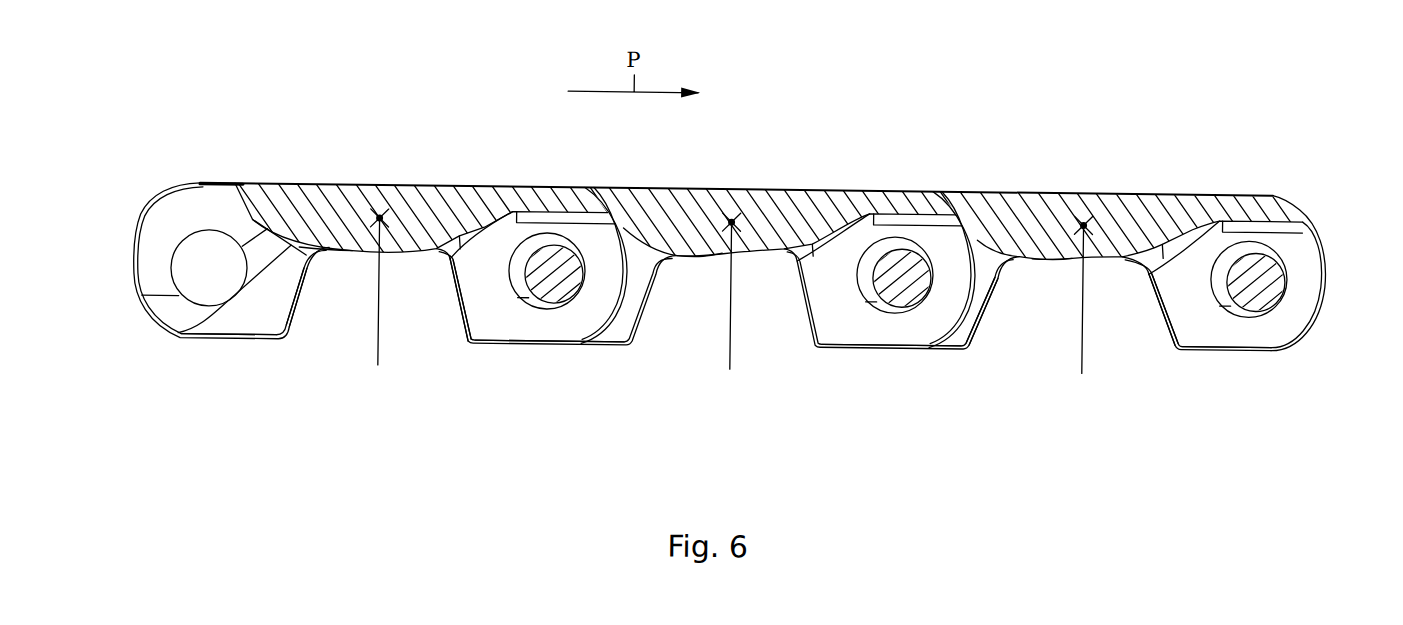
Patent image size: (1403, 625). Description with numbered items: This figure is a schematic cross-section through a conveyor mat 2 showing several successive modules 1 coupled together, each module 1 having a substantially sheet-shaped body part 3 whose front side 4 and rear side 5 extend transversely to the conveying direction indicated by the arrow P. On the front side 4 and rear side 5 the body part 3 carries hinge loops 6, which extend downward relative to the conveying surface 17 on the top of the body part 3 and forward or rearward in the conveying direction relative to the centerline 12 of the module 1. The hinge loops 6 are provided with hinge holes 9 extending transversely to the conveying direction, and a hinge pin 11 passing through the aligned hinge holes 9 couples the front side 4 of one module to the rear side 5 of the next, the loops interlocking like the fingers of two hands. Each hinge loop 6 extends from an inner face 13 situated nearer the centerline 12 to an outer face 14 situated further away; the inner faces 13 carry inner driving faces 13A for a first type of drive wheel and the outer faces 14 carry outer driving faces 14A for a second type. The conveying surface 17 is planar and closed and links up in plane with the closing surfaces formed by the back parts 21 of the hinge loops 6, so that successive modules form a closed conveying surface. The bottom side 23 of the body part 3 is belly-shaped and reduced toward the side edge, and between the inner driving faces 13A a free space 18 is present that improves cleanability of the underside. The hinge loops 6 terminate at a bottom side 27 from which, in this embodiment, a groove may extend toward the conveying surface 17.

The module 1 is at (1130, 178).
The conveyor mat 2 is at (110, 379).
The body part 3 is at (1045, 203).
The front side 4 is at (1303, 203).
The rear side 5 is at (947, 184).
The hinge loop 6 is at (1193, 319).
The hinge hole 9 is at (1222, 274).
The hinge pin 11 is at (1268, 278).
The centerline 12 is at (729, 312).
The inner face 13 is at (1134, 262).
The inner driving face 13A is at (1151, 260).
The outer face 14 is at (1328, 269).
The outer driving face 14A is at (1317, 312).
The conveying surface 17 is at (1084, 216).
The free space 18 is at (1127, 296).
The back part 21 is at (1244, 184).
The bottom side 23 is at (1064, 249).
The bottom side 27 is at (1249, 339).